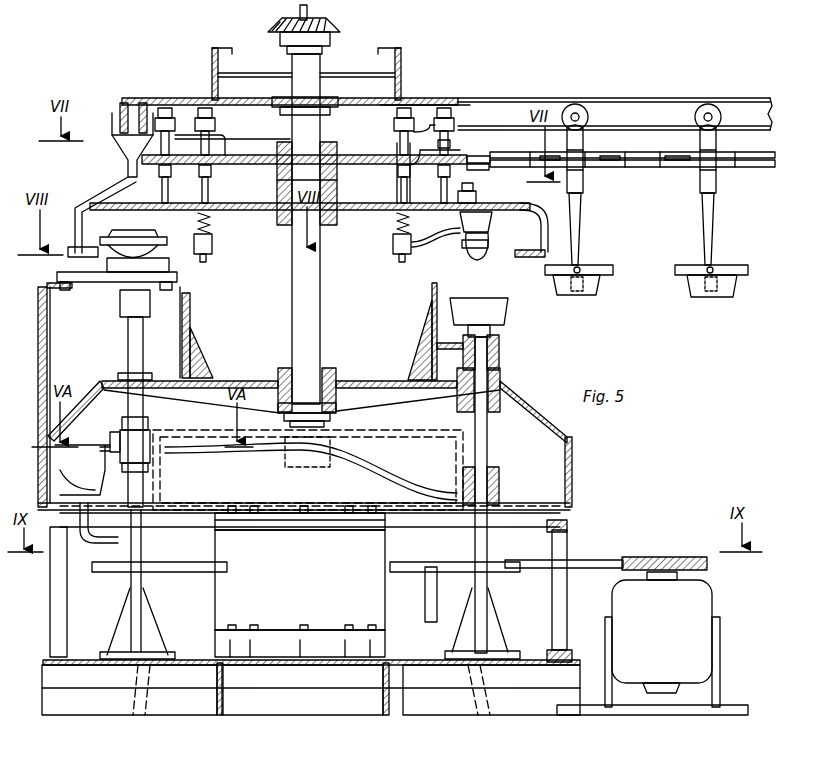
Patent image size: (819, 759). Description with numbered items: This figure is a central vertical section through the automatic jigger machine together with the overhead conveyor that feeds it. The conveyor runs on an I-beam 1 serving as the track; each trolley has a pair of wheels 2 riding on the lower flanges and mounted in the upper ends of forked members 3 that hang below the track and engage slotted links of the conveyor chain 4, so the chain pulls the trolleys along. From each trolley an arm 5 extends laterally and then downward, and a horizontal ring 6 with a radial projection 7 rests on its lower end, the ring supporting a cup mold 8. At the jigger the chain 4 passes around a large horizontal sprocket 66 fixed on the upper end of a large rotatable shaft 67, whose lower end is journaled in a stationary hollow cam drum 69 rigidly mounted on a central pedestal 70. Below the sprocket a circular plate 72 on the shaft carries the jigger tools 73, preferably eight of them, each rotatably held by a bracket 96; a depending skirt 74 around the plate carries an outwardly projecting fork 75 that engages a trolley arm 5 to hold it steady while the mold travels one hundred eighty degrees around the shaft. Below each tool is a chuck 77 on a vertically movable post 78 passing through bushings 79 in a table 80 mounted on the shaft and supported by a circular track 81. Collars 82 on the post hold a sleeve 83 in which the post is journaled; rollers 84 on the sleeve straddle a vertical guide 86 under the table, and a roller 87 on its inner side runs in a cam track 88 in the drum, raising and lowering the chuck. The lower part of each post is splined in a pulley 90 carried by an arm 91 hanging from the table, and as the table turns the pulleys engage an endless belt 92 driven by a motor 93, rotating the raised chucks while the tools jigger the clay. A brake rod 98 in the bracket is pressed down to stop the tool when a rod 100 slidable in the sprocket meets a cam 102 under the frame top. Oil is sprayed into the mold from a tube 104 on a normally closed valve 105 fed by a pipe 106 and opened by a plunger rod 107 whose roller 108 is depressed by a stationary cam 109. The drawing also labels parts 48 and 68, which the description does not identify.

The I-beam 1 is at (645, 98).
The wheels 2 is at (713, 104).
The forked members 3 is at (717, 143).
The conveyor chain 4 is at (740, 170).
The arm 5 is at (716, 222).
The horizontal ring 6 is at (749, 270).
The radial projection 7 is at (96, 283).
The molds 8 is at (735, 290).
The pin 48 is at (697, 279).
The sprocket 66 is at (470, 166).
The rotatable shaft 67 is at (321, 283).
The top beam 68 is at (193, 99).
The hollow cam drum 69 is at (285, 520).
The central pedestal 70 is at (318, 591).
The circular plate 72 is at (265, 211).
The jigger tools 73 is at (118, 236).
The depending skirt 74 is at (528, 209).
The fork 75 is at (532, 254).
The chuck 77 is at (171, 268).
The vertically movable posts 78 is at (128, 348).
The bushings 79 is at (122, 376).
The table 80 is at (252, 381).
The circular track 81 is at (568, 526).
The collars 82 is at (122, 425).
The sleeve 83 is at (151, 436).
The rollers 84 is at (107, 447).
The vertical guide 86 is at (110, 433).
The roller 87 is at (162, 447).
The cam track 88 is at (214, 452).
The pulley 90 is at (103, 575).
The arm 91 is at (105, 543).
The endless belt 92 is at (583, 560).
The motor 93 is at (673, 640).
The bracket 96 is at (490, 222).
The brake rod 98 is at (478, 188).
The rod 100 is at (450, 143).
The cam 102 is at (452, 112).
The tube 104 is at (433, 248).
The valve 105 is at (400, 252).
The pipe 106 is at (397, 177).
The plunger rod 107 is at (405, 177).
The roller 108 is at (397, 115).
The cam 109 is at (416, 106).